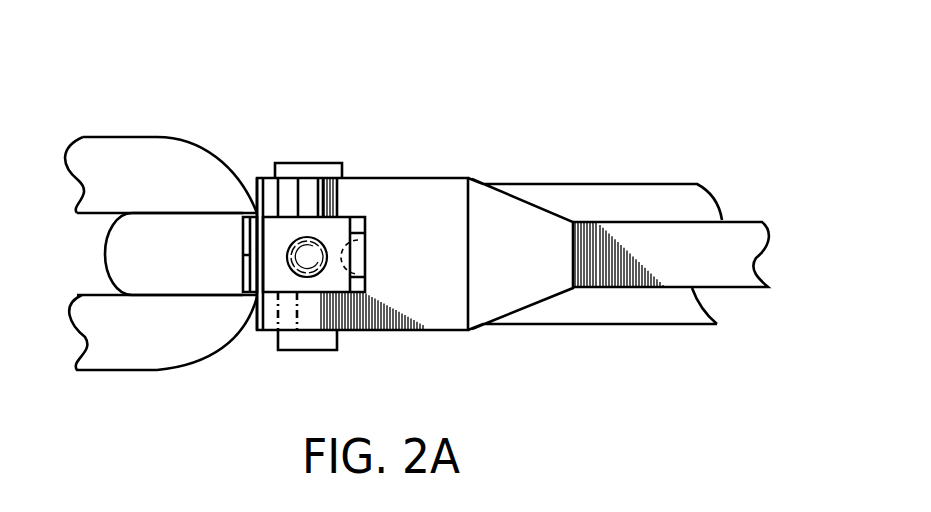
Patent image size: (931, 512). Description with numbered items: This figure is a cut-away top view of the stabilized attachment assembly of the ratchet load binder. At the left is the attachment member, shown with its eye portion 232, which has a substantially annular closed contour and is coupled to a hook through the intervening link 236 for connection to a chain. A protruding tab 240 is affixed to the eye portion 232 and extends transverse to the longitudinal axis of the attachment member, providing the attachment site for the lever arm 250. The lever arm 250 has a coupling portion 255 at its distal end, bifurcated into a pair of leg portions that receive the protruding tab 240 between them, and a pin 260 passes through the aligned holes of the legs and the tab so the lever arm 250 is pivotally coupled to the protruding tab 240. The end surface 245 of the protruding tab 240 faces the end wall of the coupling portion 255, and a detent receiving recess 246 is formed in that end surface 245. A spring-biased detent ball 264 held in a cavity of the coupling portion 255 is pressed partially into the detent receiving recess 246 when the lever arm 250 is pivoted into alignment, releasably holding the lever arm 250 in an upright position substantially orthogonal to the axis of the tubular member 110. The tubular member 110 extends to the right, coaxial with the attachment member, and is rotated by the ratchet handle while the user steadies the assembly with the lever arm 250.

The tubular member 110 is at (588, 197).
The eye portion 232 is at (200, 237).
The intervening link 236 is at (125, 137).
The protruding tab 240 is at (373, 222).
The end surface 245 is at (273, 275).
The detent receiving recess 246 is at (312, 252).
The lever arm 250 is at (745, 220).
The coupling portion 255 is at (435, 197).
The pin 260 is at (308, 340).
The detent ball 264 is at (362, 257).